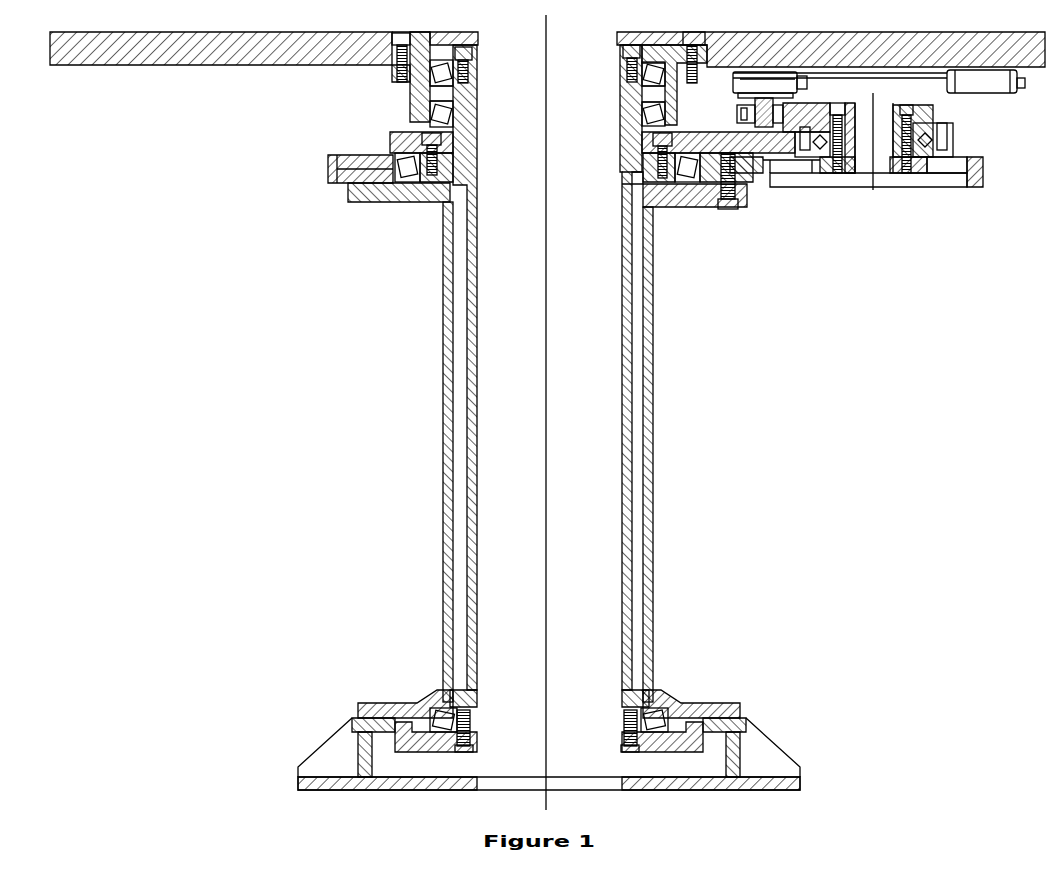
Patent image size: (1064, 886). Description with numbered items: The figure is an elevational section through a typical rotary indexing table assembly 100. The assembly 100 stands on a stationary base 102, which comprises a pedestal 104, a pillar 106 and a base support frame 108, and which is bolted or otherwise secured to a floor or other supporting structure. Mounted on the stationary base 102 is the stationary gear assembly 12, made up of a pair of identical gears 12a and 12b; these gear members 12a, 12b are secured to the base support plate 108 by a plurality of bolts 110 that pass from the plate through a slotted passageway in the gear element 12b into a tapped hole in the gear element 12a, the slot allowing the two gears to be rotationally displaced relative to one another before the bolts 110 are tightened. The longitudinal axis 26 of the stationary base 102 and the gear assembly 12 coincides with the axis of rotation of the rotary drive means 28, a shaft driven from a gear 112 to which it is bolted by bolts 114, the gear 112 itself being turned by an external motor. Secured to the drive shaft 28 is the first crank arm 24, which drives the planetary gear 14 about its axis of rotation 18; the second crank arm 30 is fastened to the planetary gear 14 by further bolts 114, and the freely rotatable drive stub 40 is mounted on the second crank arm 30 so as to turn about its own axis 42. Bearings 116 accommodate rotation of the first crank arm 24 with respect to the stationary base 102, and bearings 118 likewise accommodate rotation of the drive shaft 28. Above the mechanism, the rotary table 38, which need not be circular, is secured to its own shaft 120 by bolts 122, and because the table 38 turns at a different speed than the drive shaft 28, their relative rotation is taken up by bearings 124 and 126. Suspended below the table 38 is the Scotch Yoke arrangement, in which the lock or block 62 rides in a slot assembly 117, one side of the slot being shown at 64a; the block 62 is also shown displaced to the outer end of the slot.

The stationary gear assembly 12 is at (357, 175).
The gear element 12a is at (350, 162).
The gear element 12b is at (348, 192).
The planetary gear 14 is at (950, 185).
The axis of rotation 18 is at (873, 190).
The first crank arm 24 is at (800, 160).
The longitudinal axis 26 is at (547, 570).
The rotary drive means 28 is at (619, 631).
The second crank arm 30 is at (815, 103).
The rotary table 38 is at (168, 32).
The freely rotatable drive stub 40 is at (770, 75).
The axis of rotation 42 is at (740, 114).
The lock 62 is at (886, 62).
The slot side 64a is at (915, 75).
The assembly 100 is at (398, 412).
The stationary base 102 is at (583, 452).
The pedestal 104 is at (770, 745).
The pillar 106 is at (655, 290).
The base support frame 108 is at (680, 207).
The bolts 110 is at (740, 196).
The gear 112 is at (690, 718).
The bolts 114 is at (838, 165).
The bearings 116 is at (410, 170).
The slot assembly 117 is at (885, 80).
The bearings 118 is at (660, 700).
The shaft 120 is at (410, 64).
The bolts 122 is at (410, 45).
The bearings 124 is at (452, 70).
The bearings 126 is at (453, 113).